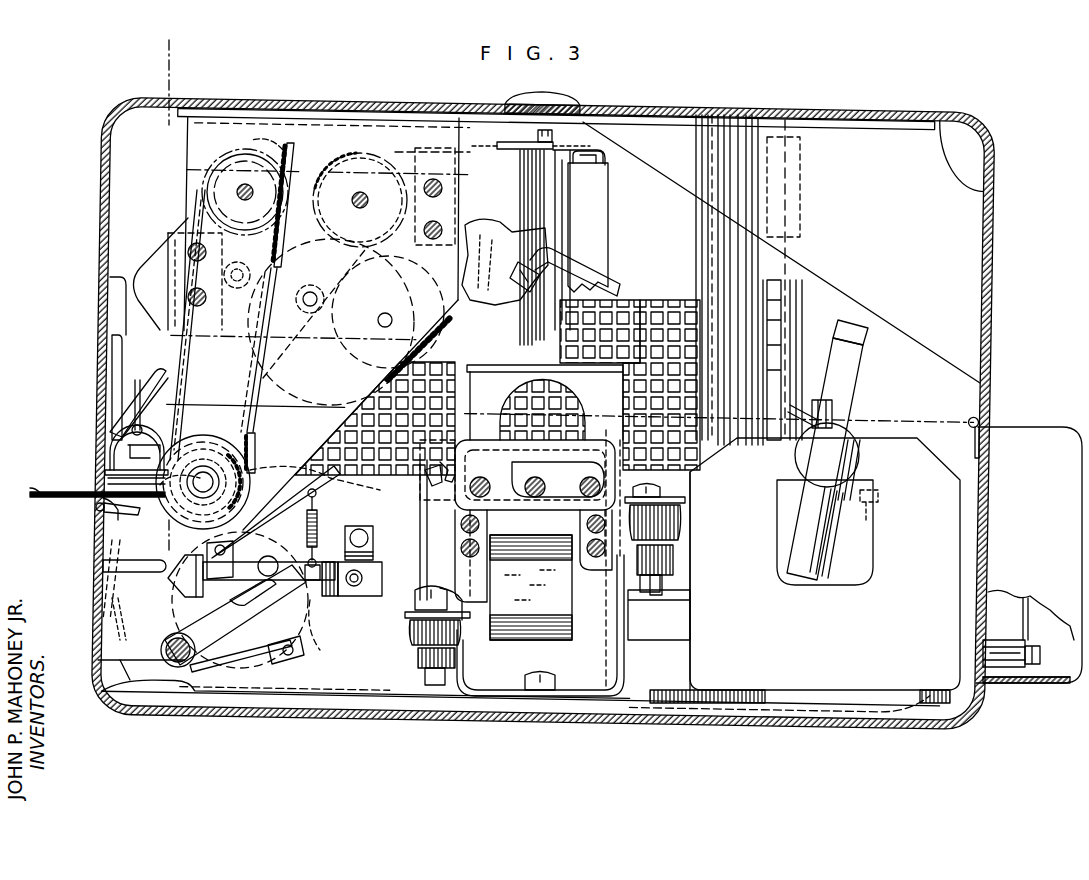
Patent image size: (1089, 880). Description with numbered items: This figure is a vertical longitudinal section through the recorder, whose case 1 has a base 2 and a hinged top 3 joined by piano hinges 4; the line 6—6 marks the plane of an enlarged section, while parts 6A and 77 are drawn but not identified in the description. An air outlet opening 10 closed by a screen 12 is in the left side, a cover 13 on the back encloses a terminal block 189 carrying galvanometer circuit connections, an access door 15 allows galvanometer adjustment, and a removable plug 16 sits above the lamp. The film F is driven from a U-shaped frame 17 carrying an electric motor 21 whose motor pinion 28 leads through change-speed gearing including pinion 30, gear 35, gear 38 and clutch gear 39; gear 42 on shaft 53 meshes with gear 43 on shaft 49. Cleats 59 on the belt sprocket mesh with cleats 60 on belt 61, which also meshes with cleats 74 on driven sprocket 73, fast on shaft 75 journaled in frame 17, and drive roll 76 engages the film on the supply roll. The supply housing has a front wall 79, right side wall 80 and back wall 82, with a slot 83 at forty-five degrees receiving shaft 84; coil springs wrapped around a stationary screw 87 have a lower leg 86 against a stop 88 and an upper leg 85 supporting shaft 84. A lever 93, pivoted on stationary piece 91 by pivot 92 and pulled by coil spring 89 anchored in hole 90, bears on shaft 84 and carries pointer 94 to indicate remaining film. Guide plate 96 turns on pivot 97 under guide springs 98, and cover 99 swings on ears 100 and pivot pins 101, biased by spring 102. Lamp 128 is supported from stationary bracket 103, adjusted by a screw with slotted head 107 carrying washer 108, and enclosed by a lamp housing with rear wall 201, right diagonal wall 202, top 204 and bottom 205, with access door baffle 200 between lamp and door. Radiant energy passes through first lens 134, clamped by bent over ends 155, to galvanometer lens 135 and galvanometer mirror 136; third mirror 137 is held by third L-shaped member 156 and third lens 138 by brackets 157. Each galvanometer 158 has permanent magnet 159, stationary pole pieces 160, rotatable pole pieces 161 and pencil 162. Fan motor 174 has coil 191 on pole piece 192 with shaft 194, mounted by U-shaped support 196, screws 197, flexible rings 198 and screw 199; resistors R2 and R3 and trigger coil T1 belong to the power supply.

The case 1 is at (92, 95).
The base 2 is at (98, 660).
The top 3 is at (103, 187).
The piano hinges 4 is at (970, 414).
The section line 6 is at (167, 57).
The pivot 6A is at (103, 456).
The air outlet opening 10 is at (625, 320).
The screen 12 is at (650, 320).
The cover 13 is at (1035, 438).
The access door 15 is at (860, 112).
The removable plug 16 is at (540, 93).
The U-shaped frame 17 is at (192, 140).
The electric motor 21 is at (150, 262).
The motor pinion 28 is at (237, 290).
The pinion 30 is at (310, 289).
The gear 35 is at (296, 365).
The gear 38 is at (448, 335).
The clutch gear 39 is at (408, 160).
The gear 42 is at (325, 152).
The gear 43 is at (285, 146).
The shaft 49 is at (243, 198).
The shaft 53 is at (362, 204).
The cleats 59 is at (268, 178).
The cleats 60 is at (262, 236).
The belt 61 is at (283, 248).
The belt driven sprocket 73 is at (212, 448).
The cleats 74 is at (232, 440).
The shaft 75 is at (198, 505).
The drive roll 76 is at (200, 442).
The plate 77 is at (107, 470).
The front wall 79 is at (103, 618).
The right side wall 80 is at (290, 690).
The back wall 82 is at (453, 598).
The slot 83 is at (252, 552).
The shaft 84 is at (272, 566).
The upper leg 85 is at (212, 622).
The lower leg 86 is at (228, 655).
The stationary screw 87 is at (165, 646).
The stop 88 is at (280, 650).
The coil spring 89 is at (318, 522).
The hole 90 is at (315, 492).
The stationary piece 91 is at (363, 546).
The pivot 92 is at (355, 584).
The lever 93 is at (320, 612).
The pointer 94 is at (182, 580).
The guide plate 96 is at (103, 494).
The pivot 97 is at (103, 516).
The guide springs 98 is at (105, 566).
The cover 99 is at (330, 480).
The ears 100 is at (445, 522).
The pivot pins 101 is at (318, 556).
The spring 102 is at (445, 472).
The stationary bracket 103 is at (570, 380).
The slotted head 107 is at (552, 137).
The disc-shaped washer 108 is at (605, 153).
The lamp 128 is at (468, 257).
The first lens 134 is at (525, 272).
The galvanometer lens 135 is at (822, 412).
The galvanometer mirror 136 is at (835, 422).
The third mirror 137 is at (128, 393).
The third lens 138 is at (122, 452).
The bent over ends 155 is at (620, 278).
The third L-shaped member 156 is at (118, 405).
The brackets 157 is at (116, 444).
The galvanometers 158 is at (882, 392).
The permanent magnet 159 is at (824, 685).
The stationary pole pieces 160 is at (925, 462).
The rotatable pole pieces 161 is at (845, 452).
The pencil 162 is at (853, 380).
The motor 174 is at (605, 607).
The terminal block 189 is at (1030, 638).
The coil of wire 191 is at (517, 628).
The magnetic pole piece 192 is at (586, 598).
The shaft 194 is at (538, 497).
The U-shaped support 196 is at (612, 668).
The screws 197 is at (446, 670).
The rings 198 is at (443, 637).
The screw 199 is at (543, 678).
The access door baffle 200 is at (773, 328).
The rear wall 201 is at (608, 205).
The right vertical diagonal wall 202 is at (470, 160).
The top 204 is at (510, 150).
The bottom 205 is at (500, 363).
The recording medium F is at (180, 573).
The resistor R2 is at (698, 205).
The resistor R3 is at (808, 288).
The trigger coil T1 is at (618, 363).